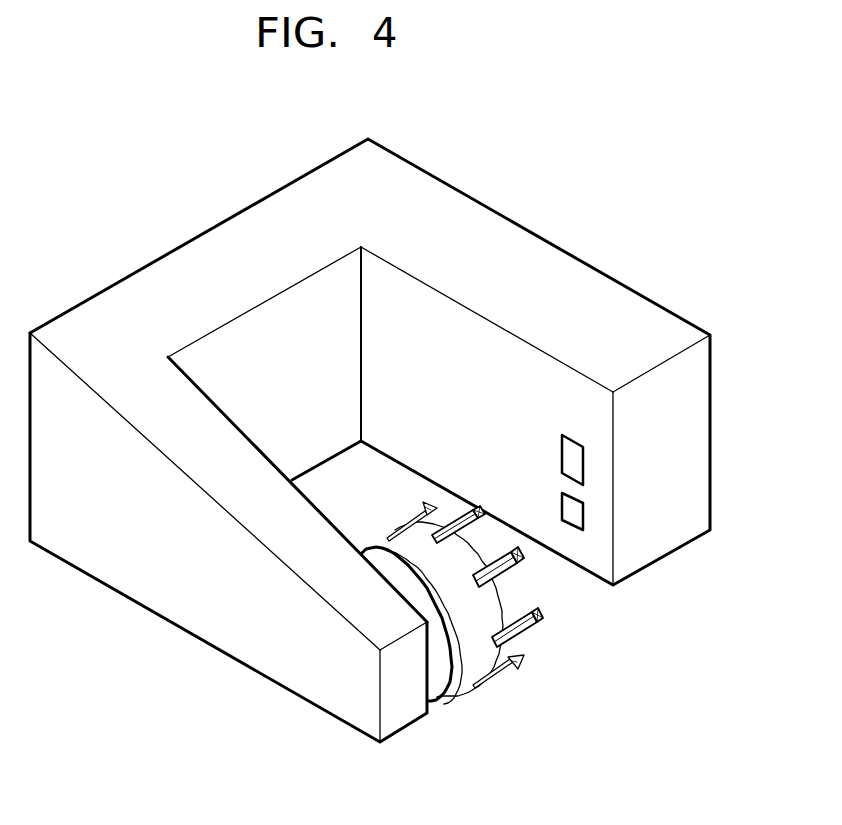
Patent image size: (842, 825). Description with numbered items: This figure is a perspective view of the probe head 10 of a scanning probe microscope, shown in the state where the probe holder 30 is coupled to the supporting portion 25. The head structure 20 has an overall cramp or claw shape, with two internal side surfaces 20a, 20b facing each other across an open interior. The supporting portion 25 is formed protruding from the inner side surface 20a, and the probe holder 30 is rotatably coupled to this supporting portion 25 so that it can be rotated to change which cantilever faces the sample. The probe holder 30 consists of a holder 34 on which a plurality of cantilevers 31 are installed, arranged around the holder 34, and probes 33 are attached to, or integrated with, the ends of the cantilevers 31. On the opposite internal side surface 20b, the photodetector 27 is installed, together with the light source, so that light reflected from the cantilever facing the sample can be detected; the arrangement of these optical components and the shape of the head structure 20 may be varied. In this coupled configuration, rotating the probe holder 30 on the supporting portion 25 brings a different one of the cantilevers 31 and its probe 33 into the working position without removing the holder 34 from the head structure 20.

The probe head 10 is at (146, 200).
The head structure 20 is at (526, 294).
The inner side surface 20a is at (238, 418).
The internal side surface 20b is at (437, 320).
The supporting portion 25 is at (583, 525).
The photodetector 27 is at (583, 470).
The probe holder 30 is at (492, 700).
The cantilevers 31 is at (512, 632).
The probes 33 is at (536, 624).
The holder 34 is at (497, 603).